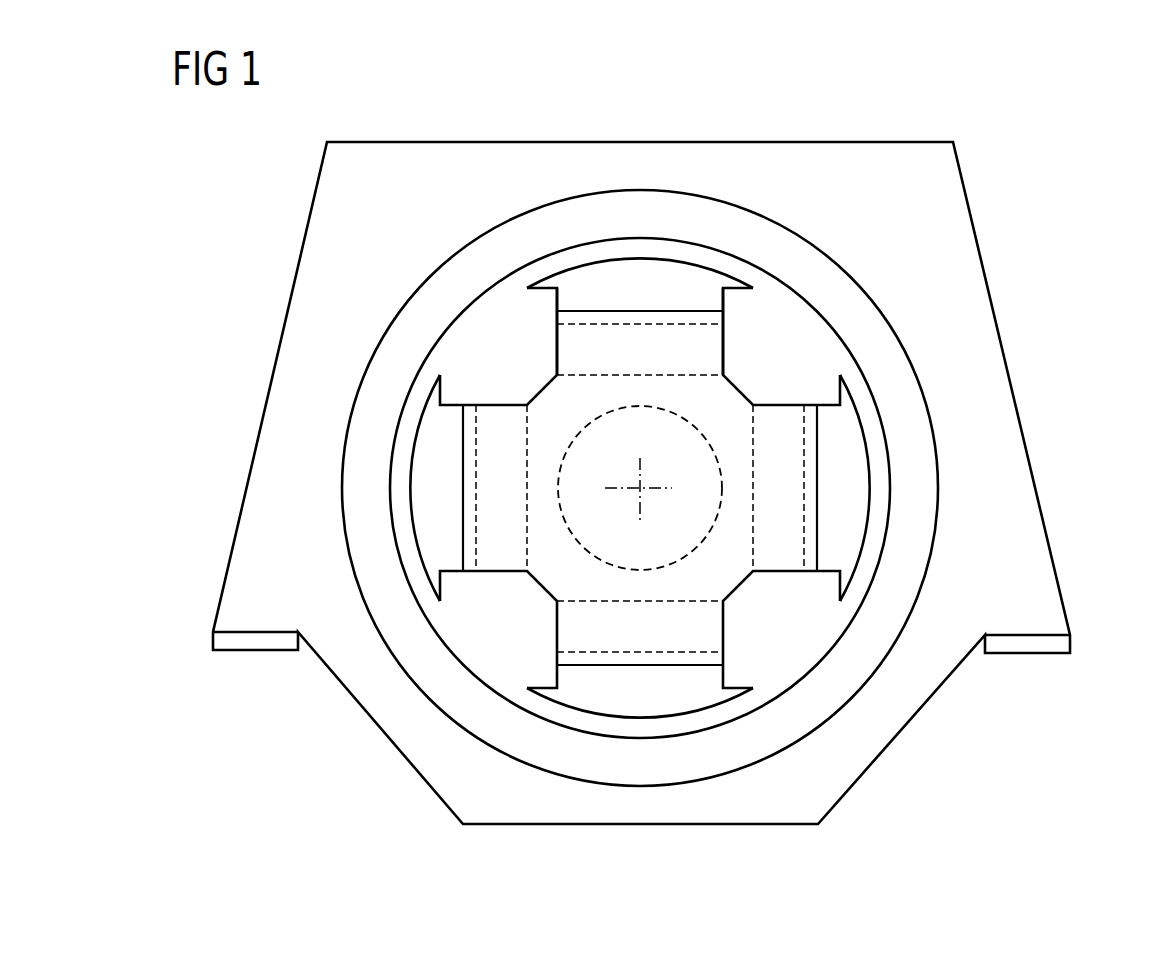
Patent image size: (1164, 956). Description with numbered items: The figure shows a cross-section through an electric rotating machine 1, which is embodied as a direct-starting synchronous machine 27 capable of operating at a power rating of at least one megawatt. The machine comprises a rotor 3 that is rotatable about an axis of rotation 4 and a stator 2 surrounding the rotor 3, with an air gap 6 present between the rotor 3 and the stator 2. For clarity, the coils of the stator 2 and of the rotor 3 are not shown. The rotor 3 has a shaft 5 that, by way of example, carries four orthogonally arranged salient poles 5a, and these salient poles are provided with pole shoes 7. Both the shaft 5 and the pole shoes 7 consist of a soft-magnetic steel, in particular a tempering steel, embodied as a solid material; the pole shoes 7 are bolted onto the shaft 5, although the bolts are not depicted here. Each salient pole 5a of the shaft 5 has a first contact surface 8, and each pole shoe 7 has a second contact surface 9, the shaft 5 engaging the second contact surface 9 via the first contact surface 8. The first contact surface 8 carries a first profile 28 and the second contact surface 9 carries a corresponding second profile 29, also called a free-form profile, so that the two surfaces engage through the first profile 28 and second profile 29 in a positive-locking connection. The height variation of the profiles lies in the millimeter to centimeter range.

The electric rotating machine 1 is at (670, 483).
The stator 2 is at (917, 442).
The rotor 3 is at (735, 422).
The axis of rotation 4 is at (642, 487).
The shaft 5 is at (715, 588).
The salient pole 5a is at (502, 428).
The air gap 6 is at (436, 604).
The pole shoe 7 is at (643, 277).
The first contact surface 8 is at (575, 320).
The second contact surface 9 is at (589, 310).
The direct-starting synchronous machine 27 is at (1073, 279).
The first profile 28 is at (672, 321).
The second profile 29 is at (735, 323).